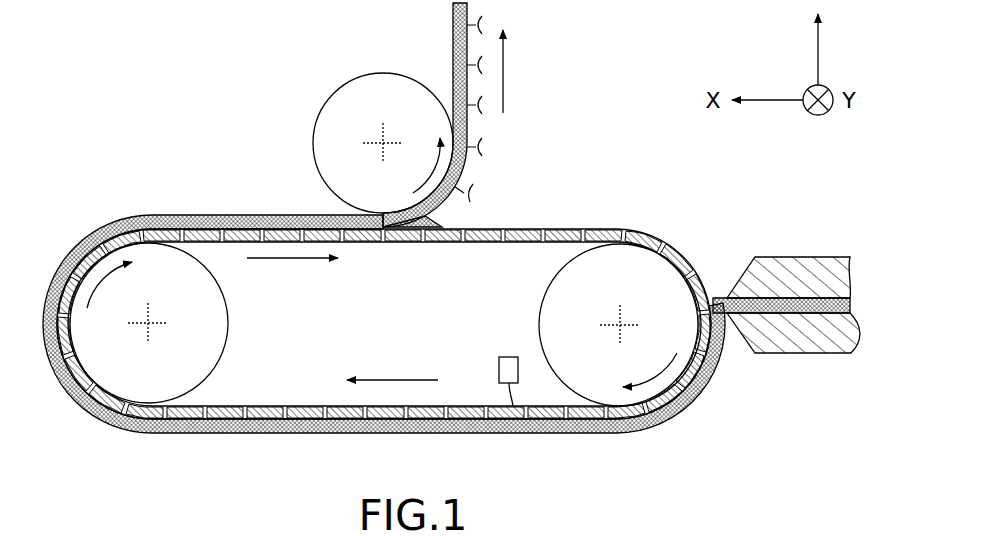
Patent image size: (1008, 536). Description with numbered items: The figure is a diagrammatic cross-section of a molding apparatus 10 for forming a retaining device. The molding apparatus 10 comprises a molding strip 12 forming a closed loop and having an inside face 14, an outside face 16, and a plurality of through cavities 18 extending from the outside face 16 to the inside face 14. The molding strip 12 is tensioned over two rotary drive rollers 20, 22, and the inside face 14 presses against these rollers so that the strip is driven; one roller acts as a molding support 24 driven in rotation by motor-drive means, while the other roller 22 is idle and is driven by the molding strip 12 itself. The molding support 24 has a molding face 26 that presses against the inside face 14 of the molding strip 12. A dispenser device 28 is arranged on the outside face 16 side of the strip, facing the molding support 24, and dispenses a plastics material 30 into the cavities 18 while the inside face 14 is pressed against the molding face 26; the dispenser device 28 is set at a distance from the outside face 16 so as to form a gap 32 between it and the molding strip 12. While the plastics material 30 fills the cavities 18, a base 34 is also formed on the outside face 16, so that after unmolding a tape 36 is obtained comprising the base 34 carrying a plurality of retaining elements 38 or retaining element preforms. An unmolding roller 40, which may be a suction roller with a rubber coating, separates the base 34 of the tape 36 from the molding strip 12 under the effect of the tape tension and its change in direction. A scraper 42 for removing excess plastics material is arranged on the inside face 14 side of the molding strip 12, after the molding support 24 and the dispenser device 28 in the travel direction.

The molding apparatus 10 is at (613, 122).
The molding strip 12 is at (650, 265).
The inside face 14 is at (449, 247).
The outside face 16 is at (522, 226).
The through cavities 18 is at (581, 227).
The rotary drive roller 20 is at (663, 240).
The rotary drive roller 22 is at (213, 325).
The molding support 24 is at (552, 325).
The molding face 26 is at (539, 299).
The dispenser device 28 is at (786, 270).
The plastics material 30 is at (853, 302).
The gap 32 is at (719, 289).
The base 34 is at (330, 434).
The tape 36 is at (450, 48).
The retaining elements 38 is at (484, 148).
The unmolding roller 40 is at (335, 130).
The scraper 42 is at (506, 390).